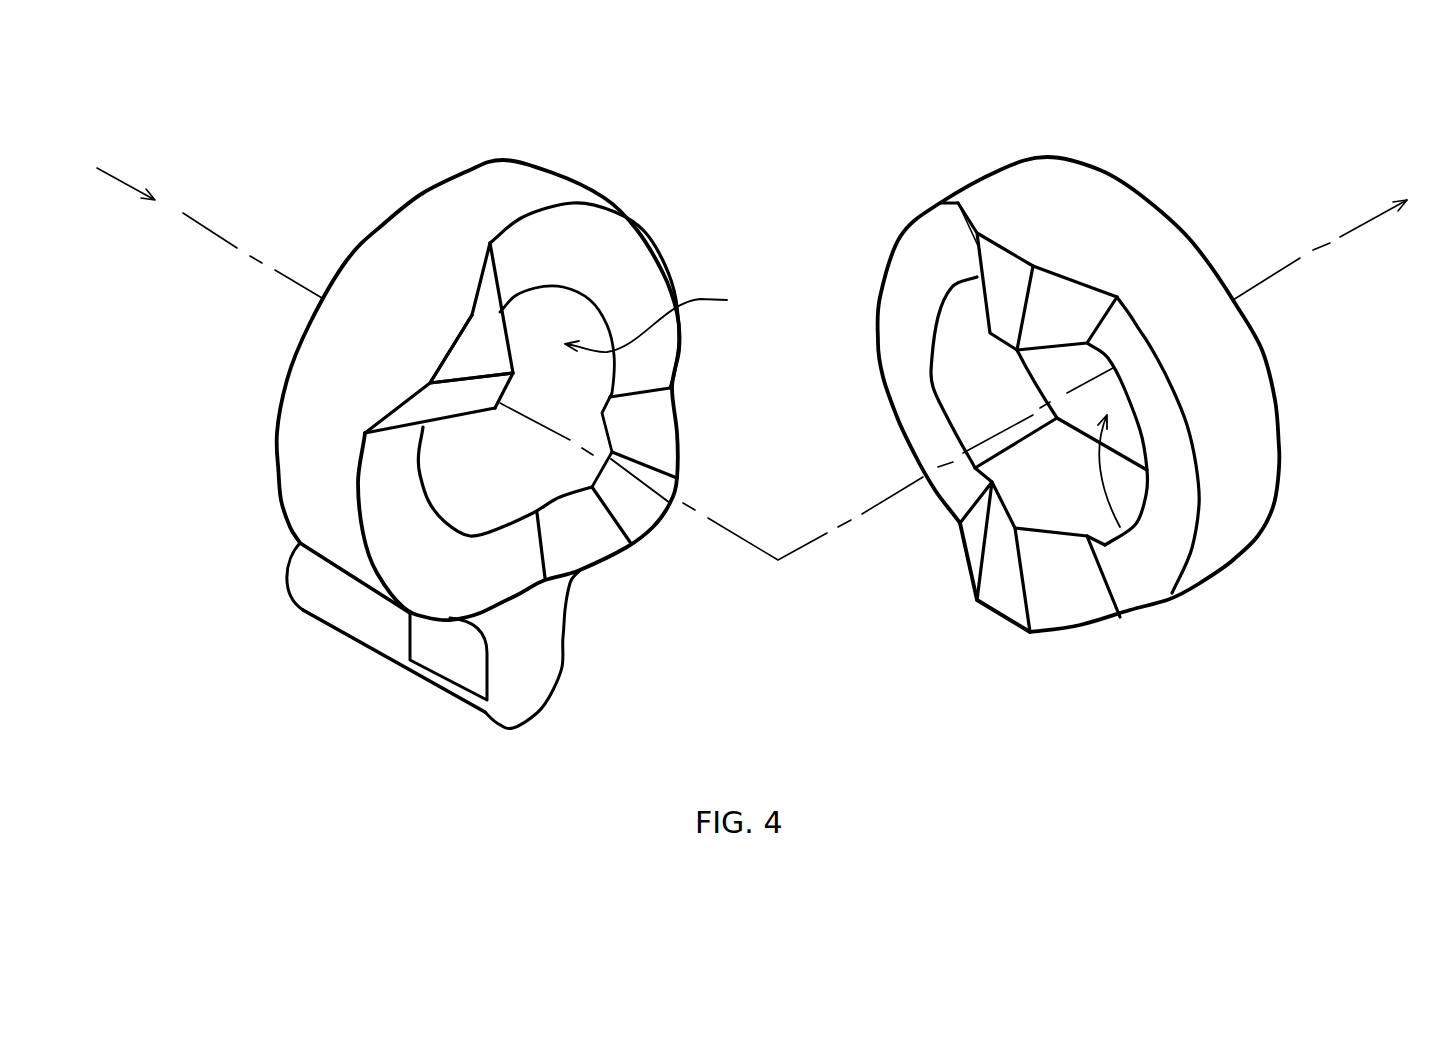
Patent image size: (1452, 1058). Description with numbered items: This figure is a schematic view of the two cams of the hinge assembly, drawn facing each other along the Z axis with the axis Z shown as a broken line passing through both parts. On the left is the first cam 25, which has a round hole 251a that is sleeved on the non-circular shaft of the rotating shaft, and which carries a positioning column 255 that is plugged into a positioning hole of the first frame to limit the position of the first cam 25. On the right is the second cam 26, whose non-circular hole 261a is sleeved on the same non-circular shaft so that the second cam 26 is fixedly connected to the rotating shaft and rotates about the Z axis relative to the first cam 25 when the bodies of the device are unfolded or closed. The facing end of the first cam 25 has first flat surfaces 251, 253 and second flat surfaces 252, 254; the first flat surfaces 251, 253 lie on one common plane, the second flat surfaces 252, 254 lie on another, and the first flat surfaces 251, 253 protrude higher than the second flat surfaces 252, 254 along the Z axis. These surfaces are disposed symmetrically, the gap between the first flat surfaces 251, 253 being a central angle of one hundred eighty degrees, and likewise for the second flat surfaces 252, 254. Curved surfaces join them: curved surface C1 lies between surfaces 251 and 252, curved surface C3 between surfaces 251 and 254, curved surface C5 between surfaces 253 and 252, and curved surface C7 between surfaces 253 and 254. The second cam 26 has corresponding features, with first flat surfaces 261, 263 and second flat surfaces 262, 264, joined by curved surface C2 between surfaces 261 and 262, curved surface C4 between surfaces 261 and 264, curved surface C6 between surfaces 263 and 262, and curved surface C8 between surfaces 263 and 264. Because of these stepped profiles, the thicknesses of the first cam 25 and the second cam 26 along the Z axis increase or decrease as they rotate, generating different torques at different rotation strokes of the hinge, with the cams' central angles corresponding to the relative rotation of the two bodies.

The first cam 25 is at (626, 159).
The first flat surface 251 is at (463, 363).
The round hole 251a is at (674, 318).
The second flat surface 252 is at (537, 240).
The first flat surface 253 is at (640, 515).
The second flat surface 254 is at (383, 512).
The positioning column 255 is at (347, 612).
The second cam 26 is at (937, 149).
The first flat surface 261 is at (1003, 263).
The non-circular hole 261a is at (1100, 547).
The second flat surface 262 is at (1133, 350).
The first flat surface 263 is at (1010, 590).
The second flat surface 264 is at (903, 397).
The curved surface C1 is at (483, 300).
The curved surface C2 is at (1067, 307).
The curved surface C3 is at (413, 407).
The curved surface C4 is at (972, 238).
The curved surface C5 is at (653, 430).
The curved surface C6 is at (1070, 603).
The curved surface C7 is at (588, 540).
The curved surface C8 is at (970, 540).
The Z axis Z is at (751, 351).